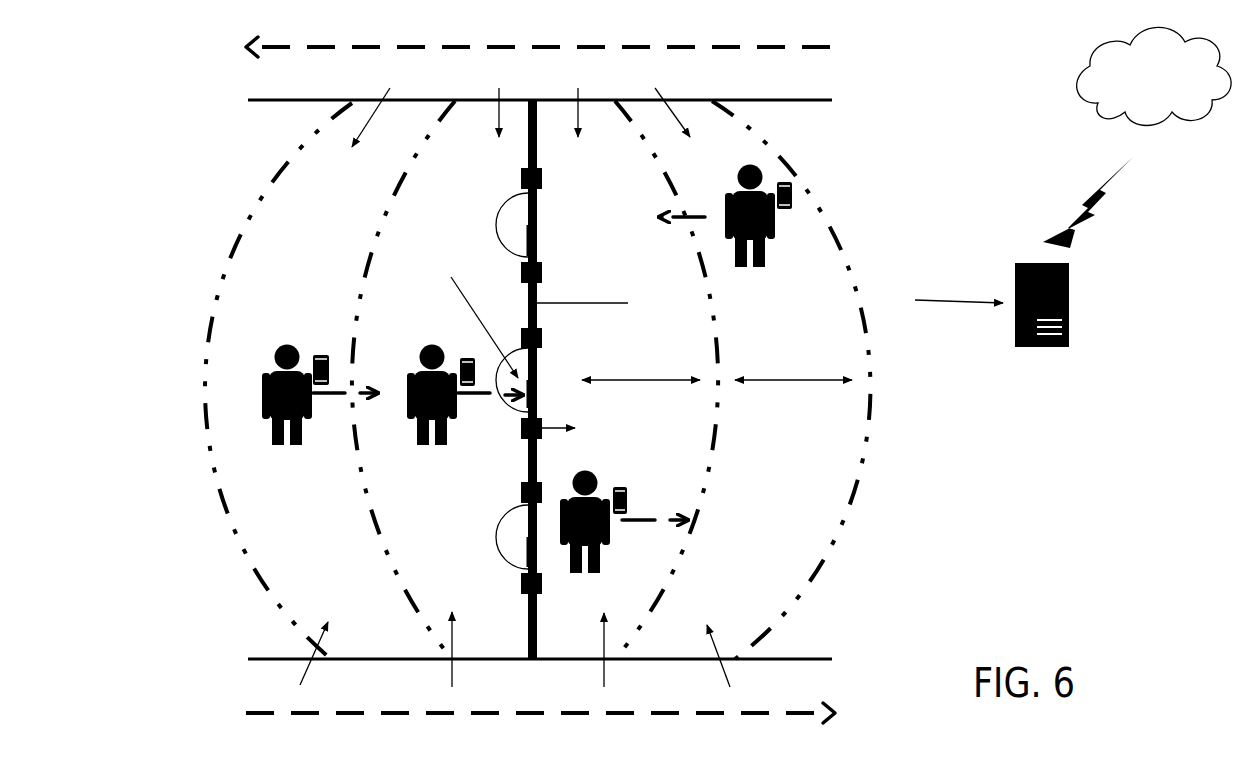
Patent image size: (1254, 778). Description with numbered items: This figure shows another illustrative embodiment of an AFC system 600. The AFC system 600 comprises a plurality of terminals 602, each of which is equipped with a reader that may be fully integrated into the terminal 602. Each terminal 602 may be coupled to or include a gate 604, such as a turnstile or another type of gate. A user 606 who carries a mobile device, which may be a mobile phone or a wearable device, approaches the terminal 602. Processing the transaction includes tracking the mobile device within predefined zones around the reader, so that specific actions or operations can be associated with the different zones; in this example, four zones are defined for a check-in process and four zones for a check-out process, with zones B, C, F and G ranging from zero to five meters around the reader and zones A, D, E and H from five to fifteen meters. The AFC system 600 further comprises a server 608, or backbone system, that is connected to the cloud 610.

The AFC system 600 is at (158, 165).
The terminal 602 is at (543, 338).
The gate 604 is at (517, 238).
The user 606 is at (413, 360).
The server 608 is at (1069, 310).
The cloud 610 is at (1098, 103).